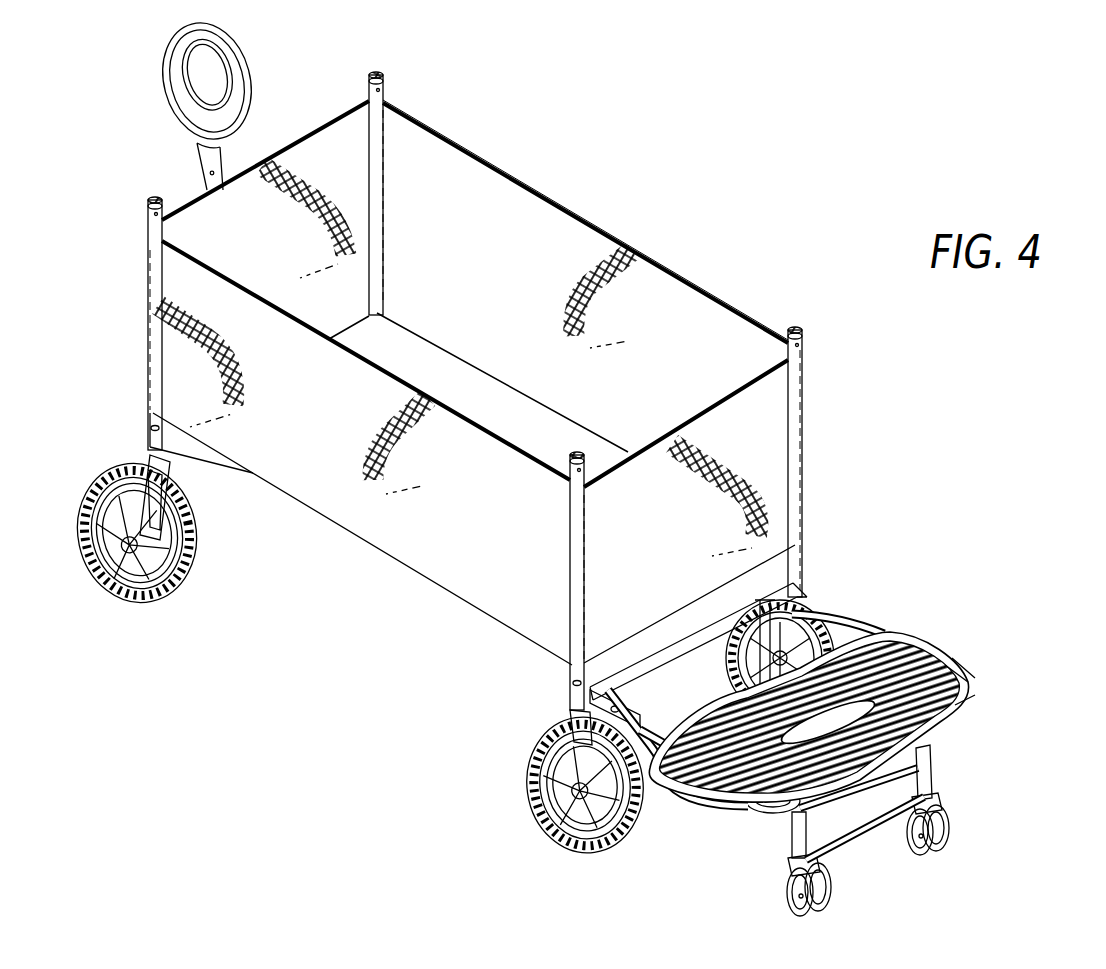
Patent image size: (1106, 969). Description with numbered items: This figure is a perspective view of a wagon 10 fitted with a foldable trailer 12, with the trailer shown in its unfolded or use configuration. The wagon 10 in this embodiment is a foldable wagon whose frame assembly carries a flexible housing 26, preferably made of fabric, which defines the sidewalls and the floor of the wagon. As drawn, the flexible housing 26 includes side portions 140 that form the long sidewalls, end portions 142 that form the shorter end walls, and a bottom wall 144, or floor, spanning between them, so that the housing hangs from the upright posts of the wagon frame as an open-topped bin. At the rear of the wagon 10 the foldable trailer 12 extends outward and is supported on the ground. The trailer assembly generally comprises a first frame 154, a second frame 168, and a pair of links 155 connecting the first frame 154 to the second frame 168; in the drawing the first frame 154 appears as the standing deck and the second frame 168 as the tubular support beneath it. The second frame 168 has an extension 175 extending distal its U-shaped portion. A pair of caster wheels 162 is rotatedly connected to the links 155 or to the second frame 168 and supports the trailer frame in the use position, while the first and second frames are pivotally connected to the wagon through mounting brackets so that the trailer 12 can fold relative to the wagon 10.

The wagon 10 is at (605, 153).
The foldable trailer 12 is at (972, 593).
The flexible housing 26 is at (671, 268).
The side portions 140 is at (455, 140).
The end portions 142 is at (322, 147).
The bottom wall 144 is at (540, 433).
The first frame 154 is at (970, 691).
The links 155 is at (923, 773).
The caster wheel 162 is at (952, 830).
The second frame 168 is at (700, 805).
The extension 175 is at (843, 840).